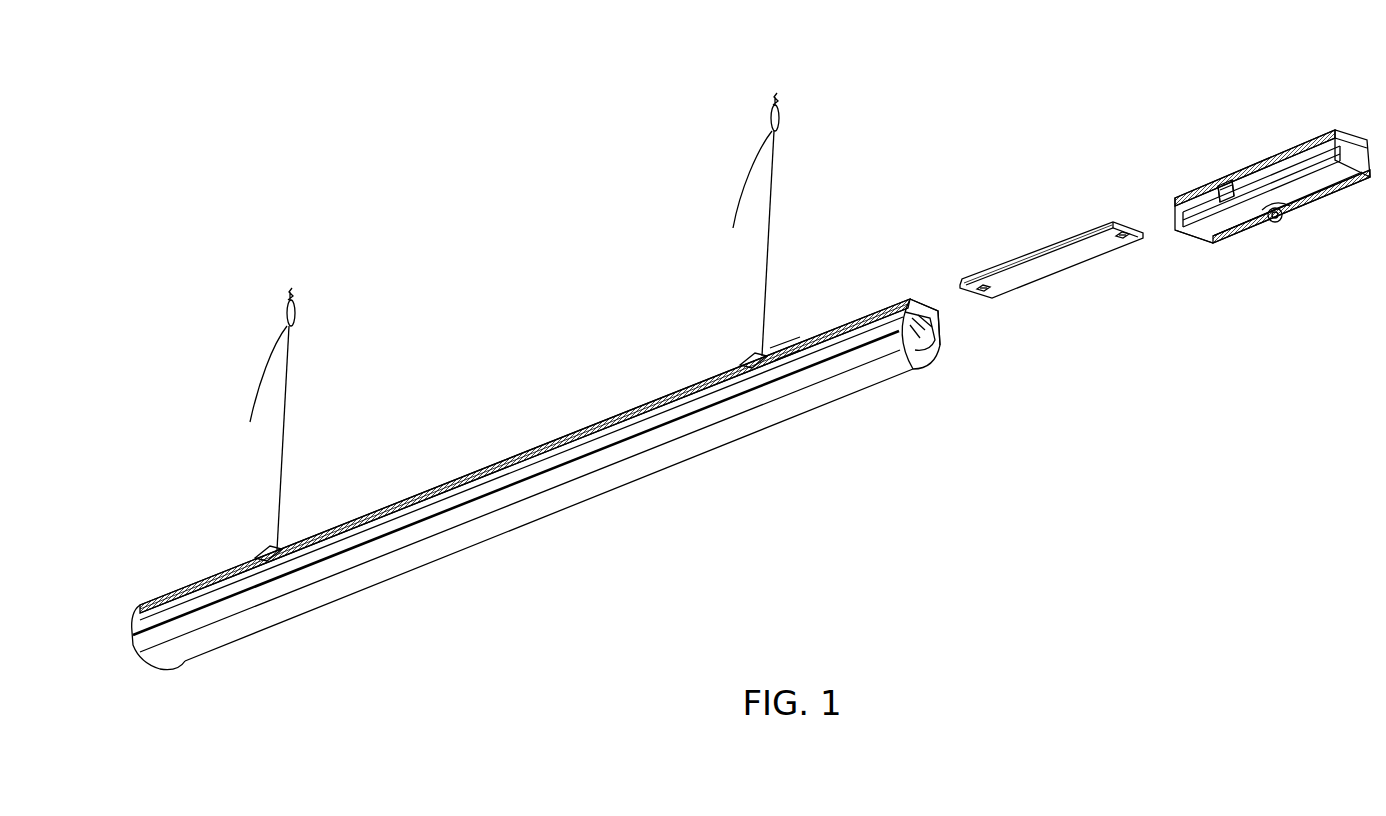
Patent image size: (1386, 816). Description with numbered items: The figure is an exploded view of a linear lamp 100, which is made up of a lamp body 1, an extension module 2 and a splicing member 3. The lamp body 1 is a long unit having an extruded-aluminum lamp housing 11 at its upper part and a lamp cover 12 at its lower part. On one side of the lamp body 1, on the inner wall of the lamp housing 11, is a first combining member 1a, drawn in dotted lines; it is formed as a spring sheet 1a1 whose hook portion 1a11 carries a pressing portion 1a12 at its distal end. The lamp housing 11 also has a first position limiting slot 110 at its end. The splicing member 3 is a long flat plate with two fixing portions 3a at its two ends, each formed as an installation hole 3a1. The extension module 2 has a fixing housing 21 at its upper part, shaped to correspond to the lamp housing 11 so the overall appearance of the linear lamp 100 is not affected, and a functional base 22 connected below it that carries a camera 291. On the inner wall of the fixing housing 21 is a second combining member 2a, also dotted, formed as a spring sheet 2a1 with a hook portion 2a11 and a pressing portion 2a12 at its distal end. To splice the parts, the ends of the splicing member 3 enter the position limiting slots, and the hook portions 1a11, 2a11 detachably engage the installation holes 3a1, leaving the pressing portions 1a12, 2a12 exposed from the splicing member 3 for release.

The linear lamp 100 is at (552, 218).
The lamp body 1 is at (637, 477).
The lamp housing 11 is at (557, 432).
The lamp cover 12 is at (537, 496).
The first combining member 1a is at (787, 345).
The spring sheet 1a1 is at (810, 353).
The hook portion 1a11 is at (793, 360).
The pressing portion 1a12 is at (789, 358).
The first position limiting slot 110 is at (912, 300).
The splicing member 3 is at (1040, 232).
The fixing portion 3a is at (1110, 222).
The installation hole 3a1 is at (985, 295).
The extension module 2 is at (1253, 150).
The fixing housing 21 is at (1310, 135).
The functional base 22 is at (1318, 188).
The second combining member 2a is at (1225, 190).
The spring sheet 2a1 is at (1227, 190).
The hook portion 2a11 is at (1227, 192).
The pressing portion 2a12 is at (1230, 195).
The camera 291 is at (1290, 222).